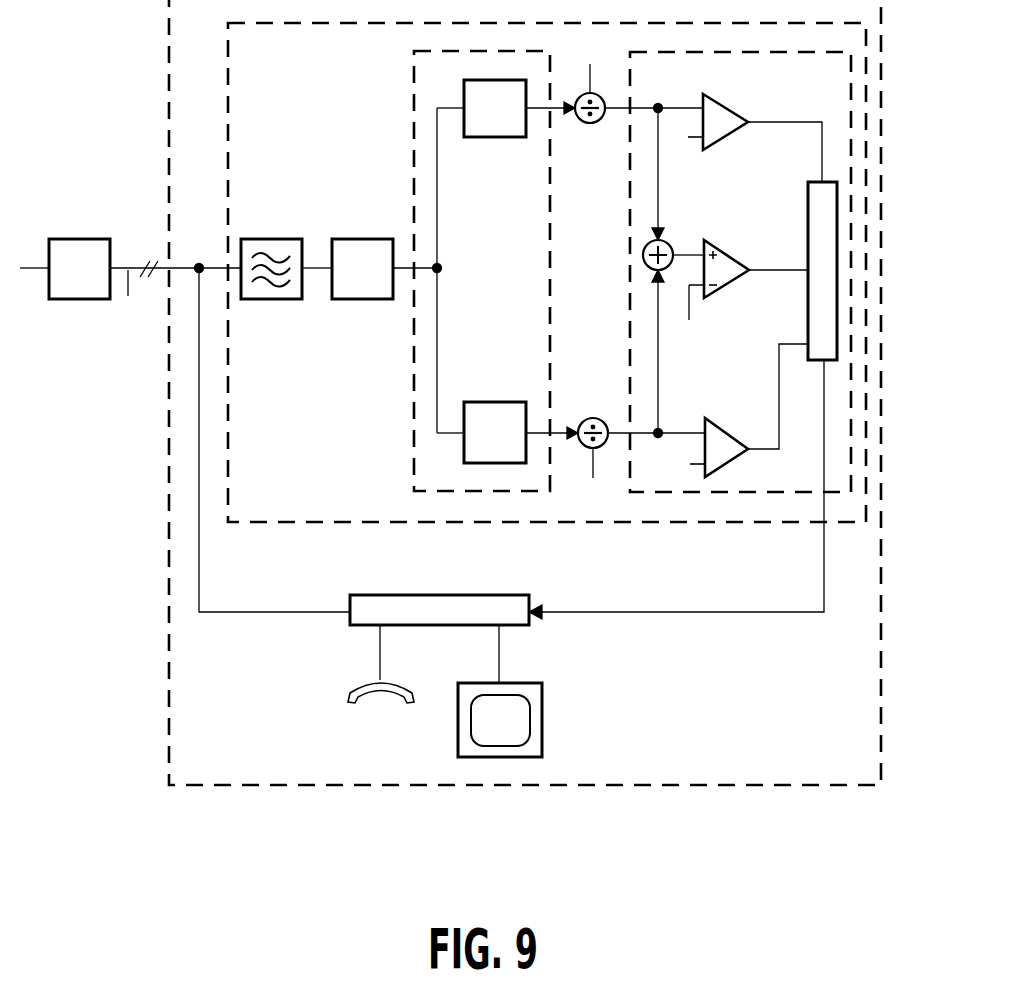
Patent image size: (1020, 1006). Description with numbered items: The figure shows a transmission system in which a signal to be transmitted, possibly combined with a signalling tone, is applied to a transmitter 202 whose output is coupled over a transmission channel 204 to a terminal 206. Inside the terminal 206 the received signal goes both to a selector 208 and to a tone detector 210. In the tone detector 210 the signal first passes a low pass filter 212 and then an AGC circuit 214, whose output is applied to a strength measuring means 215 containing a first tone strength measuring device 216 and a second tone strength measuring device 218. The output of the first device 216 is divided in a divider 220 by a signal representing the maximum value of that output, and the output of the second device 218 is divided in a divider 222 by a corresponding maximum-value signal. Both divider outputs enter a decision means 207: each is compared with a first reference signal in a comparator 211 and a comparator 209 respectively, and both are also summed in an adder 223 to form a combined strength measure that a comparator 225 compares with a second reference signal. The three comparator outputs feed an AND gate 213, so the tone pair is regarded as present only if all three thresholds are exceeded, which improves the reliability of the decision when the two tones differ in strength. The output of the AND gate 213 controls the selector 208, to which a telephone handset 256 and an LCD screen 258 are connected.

The transmitter 202 is at (73, 299).
The transmission channel 204 is at (130, 298).
The terminal 206 is at (169, 122).
The comparison unit 207 is at (630, 282).
The selector 208 is at (437, 595).
The comparator 209 is at (730, 418).
The tone detector 210 is at (228, 77).
The comparator 211 is at (733, 134).
The low pass filter 212 is at (271, 299).
The AND gate 213 is at (808, 228).
The AGC circuit 214 is at (362, 299).
The strength measuring means 215 is at (414, 108).
The first tone strength measuring device 216 is at (492, 137).
The second tone strength measuring device 218 is at (497, 402).
The divider 220 is at (590, 123).
The divider 222 is at (593, 418).
The adder 223 is at (667, 236).
The comparator 225 is at (735, 300).
The handset 256 is at (348, 697).
The LCD screen 258 is at (542, 725).